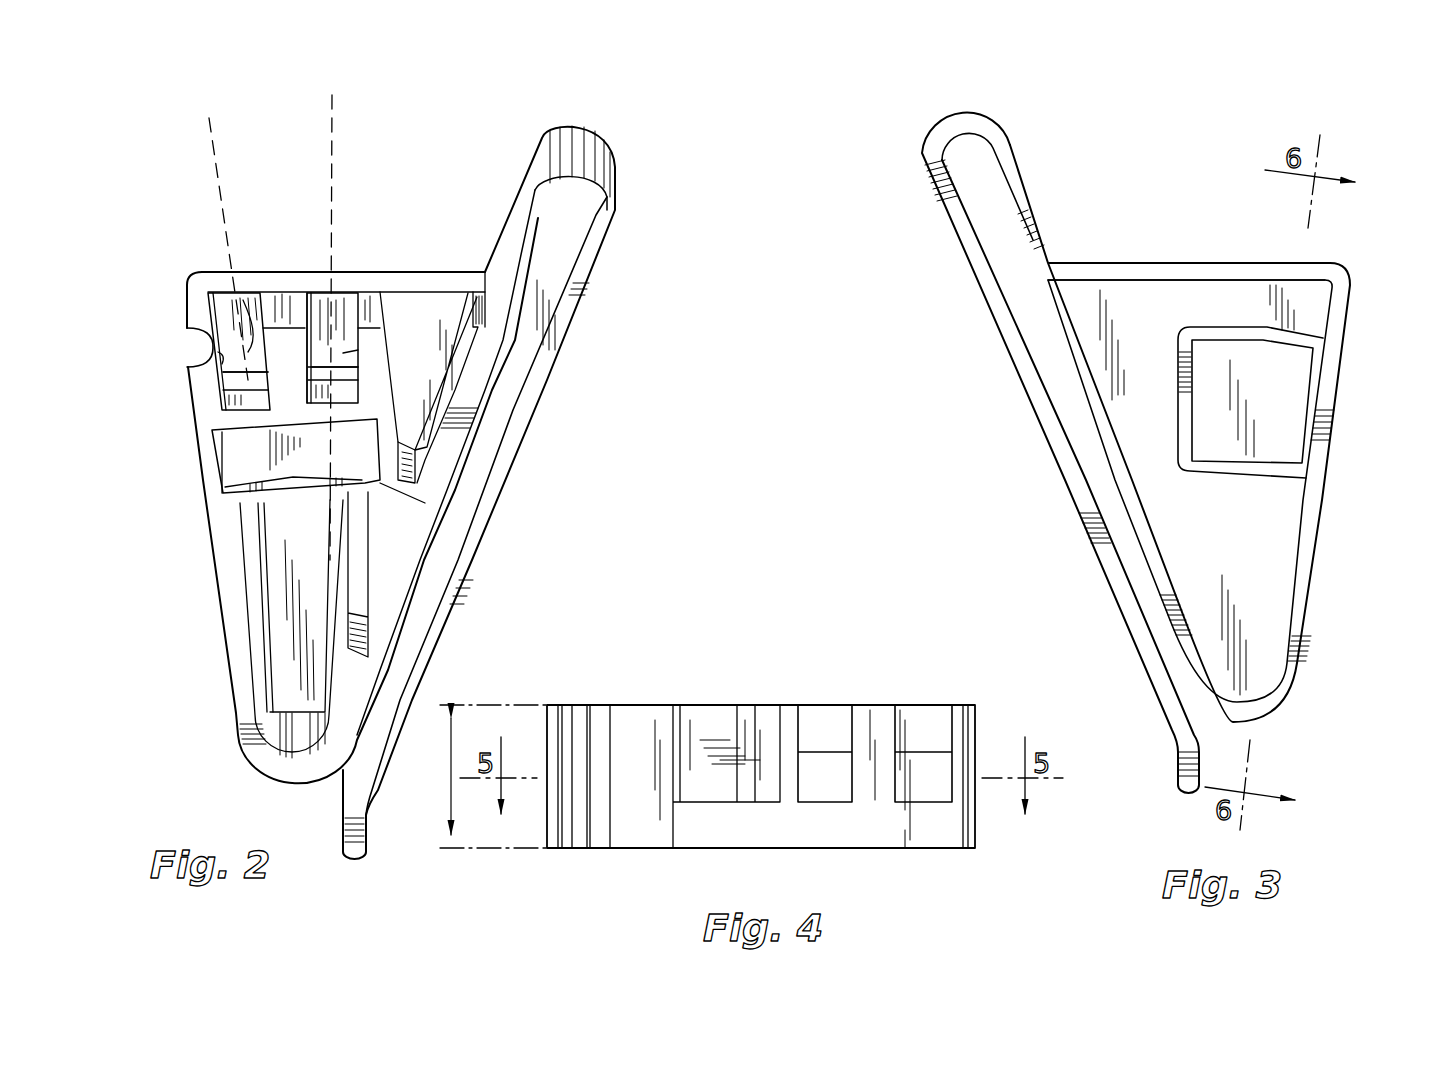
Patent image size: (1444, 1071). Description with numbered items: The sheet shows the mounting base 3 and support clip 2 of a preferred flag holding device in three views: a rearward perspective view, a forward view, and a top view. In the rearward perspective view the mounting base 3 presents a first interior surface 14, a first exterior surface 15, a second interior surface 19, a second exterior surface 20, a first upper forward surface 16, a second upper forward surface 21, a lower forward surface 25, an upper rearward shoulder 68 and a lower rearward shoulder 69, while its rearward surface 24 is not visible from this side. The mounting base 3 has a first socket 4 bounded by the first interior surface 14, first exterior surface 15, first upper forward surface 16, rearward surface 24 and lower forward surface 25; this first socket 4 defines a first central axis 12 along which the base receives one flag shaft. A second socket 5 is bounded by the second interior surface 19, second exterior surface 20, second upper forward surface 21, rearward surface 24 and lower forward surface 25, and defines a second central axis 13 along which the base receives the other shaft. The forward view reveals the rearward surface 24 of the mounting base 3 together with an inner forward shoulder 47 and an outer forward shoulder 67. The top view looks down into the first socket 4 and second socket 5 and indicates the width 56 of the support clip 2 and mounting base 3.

In FIG. 2, the support clip 2 is at (430, 633).
In FIG. 4, the support clip 2 is at (583, 848).
In FIG. 3, the support clip 2 is at (1046, 429).
In FIG. 2, the mounting base 3 is at (240, 707).
In FIG. 4, the mounting base 3 is at (968, 737).
In FIG. 3, the mounting base 3 is at (1273, 692).
In FIG. 2, the first socket 4 is at (346, 302).
In FIG. 4, the first socket 4 is at (833, 770).
In FIG. 2, the second socket 5 is at (222, 306).
In FIG. 4, the second socket 5 is at (934, 780).
In FIG. 2, the first central axis 12 is at (335, 112).
In FIG. 2, the second central axis 13 is at (213, 127).
In FIG. 2, the first interior surface 14 is at (347, 312).
In FIG. 2, the first exterior surface 15 is at (318, 293).
In FIG. 2, the first upper forward surface 16 is at (343, 353).
In FIG. 2, the second interior surface 19 is at (243, 300).
In FIG. 2, the second exterior surface 20 is at (218, 362).
In FIG. 2, the second upper forward surface 21 is at (247, 353).
In FIG. 3, the rearward surface 24 is at (1293, 402).
In FIG. 2, the lower forward surface 25 is at (263, 603).
In FIG. 3, the inner forward shoulder 47 is at (1226, 330).
In FIG. 4, the width 56 is at (450, 780).
In FIG. 3, the outer forward shoulder 67 is at (1130, 268).
In FIG. 2, the upper rearward shoulder 68 is at (317, 412).
In FIG. 2, the lower rearward shoulder 69 is at (257, 503).